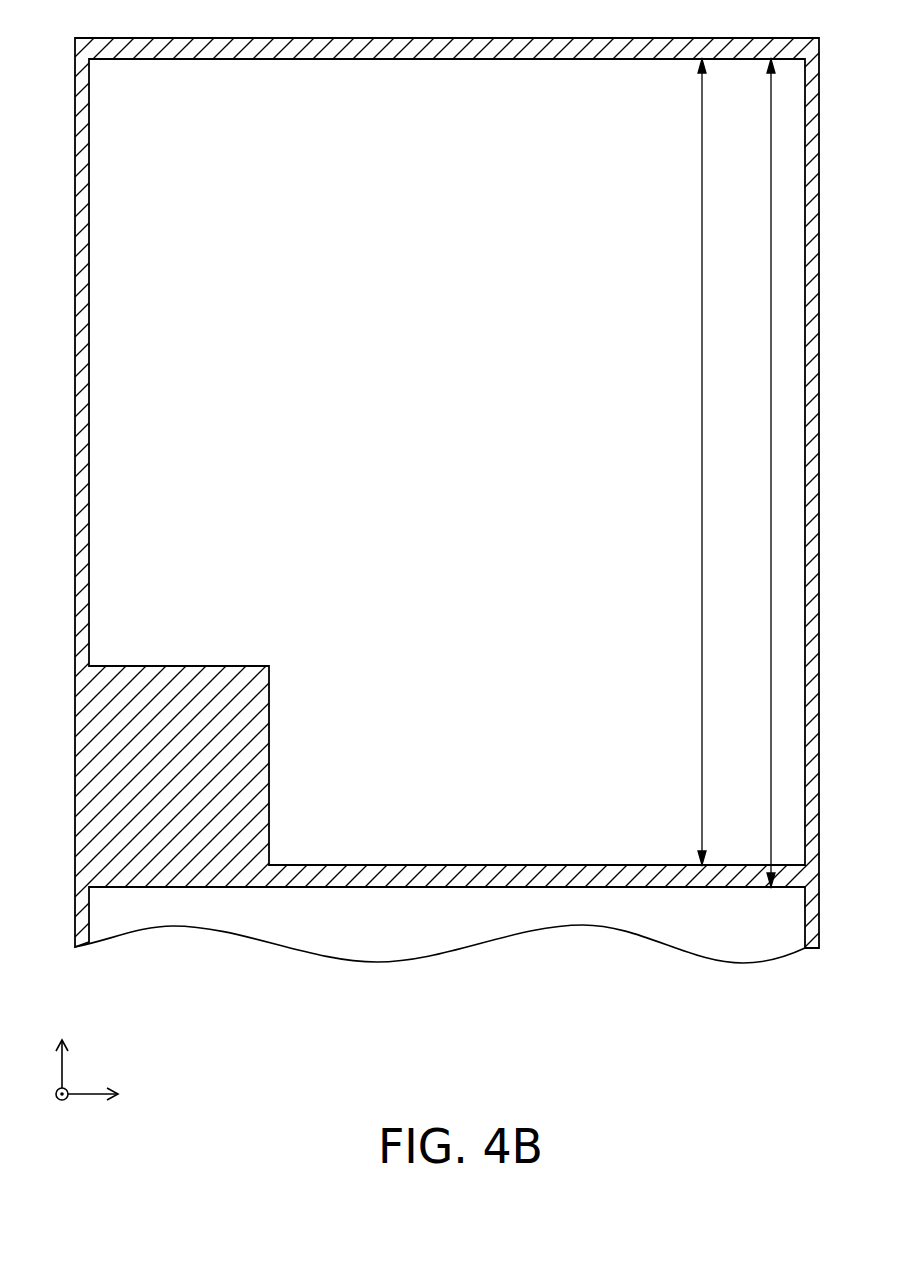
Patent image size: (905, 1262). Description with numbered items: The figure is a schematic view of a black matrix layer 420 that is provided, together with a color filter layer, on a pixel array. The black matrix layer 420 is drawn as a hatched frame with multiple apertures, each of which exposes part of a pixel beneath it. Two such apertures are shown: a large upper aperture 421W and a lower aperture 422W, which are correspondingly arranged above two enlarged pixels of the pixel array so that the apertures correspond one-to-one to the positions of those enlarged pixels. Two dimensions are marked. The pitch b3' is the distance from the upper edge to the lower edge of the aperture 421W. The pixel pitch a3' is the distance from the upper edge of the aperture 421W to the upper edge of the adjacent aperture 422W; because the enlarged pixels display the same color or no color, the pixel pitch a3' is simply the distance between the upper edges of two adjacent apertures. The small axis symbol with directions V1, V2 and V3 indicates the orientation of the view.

The black matrix layer 420 is at (848, 1049).
The aperture 421W is at (480, 474).
The aperture 422W is at (458, 937).
The pitch b3' is at (682, 462).
The pixel pitch a3' is at (753, 473).
The first direction axis V1 is at (110, 1097).
The second direction axis V2 is at (61, 1047).
The third direction axis V3 is at (44, 1106).